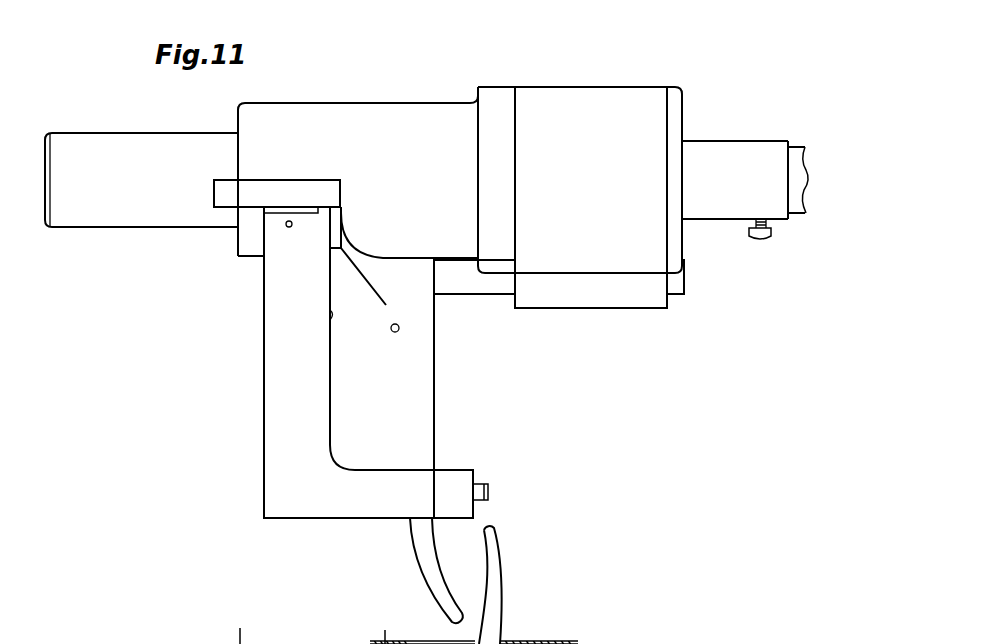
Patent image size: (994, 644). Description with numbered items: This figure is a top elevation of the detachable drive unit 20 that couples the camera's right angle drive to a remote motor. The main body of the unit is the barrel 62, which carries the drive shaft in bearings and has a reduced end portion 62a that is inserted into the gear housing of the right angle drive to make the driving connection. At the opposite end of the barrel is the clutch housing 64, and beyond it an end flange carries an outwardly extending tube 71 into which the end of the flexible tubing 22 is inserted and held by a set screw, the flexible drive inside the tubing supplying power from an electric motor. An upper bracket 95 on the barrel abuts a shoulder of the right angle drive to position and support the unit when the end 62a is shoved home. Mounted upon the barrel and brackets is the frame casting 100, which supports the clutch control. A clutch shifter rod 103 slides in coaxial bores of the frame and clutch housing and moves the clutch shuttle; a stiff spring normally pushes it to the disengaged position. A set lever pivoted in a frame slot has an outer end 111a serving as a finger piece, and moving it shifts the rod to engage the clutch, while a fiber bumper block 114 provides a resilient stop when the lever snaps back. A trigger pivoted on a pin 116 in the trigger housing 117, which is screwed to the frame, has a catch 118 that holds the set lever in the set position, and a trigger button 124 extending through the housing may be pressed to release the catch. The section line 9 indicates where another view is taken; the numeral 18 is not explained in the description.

The section line 9 is at (272, 628).
The housing 18 is at (684, 122).
The detachable drive unit 20 is at (250, 331).
The flexible tubing 22 is at (798, 215).
The barrel 62 is at (390, 110).
The reduced end portion 62a is at (112, 220).
The clutch housing 64 is at (630, 95).
The tube 71 is at (728, 216).
The upper bracket 95 is at (258, 192).
The frame casting 100 is at (279, 412).
The clutch shifter rod 103 is at (474, 288).
The outer end of set lever 111a is at (420, 556).
The fiber bumper block 114 is at (508, 640).
The pin 116 is at (385, 636).
The trigger housing 117 is at (464, 510).
The catch 118 is at (424, 640).
The trigger button 124 is at (478, 490).